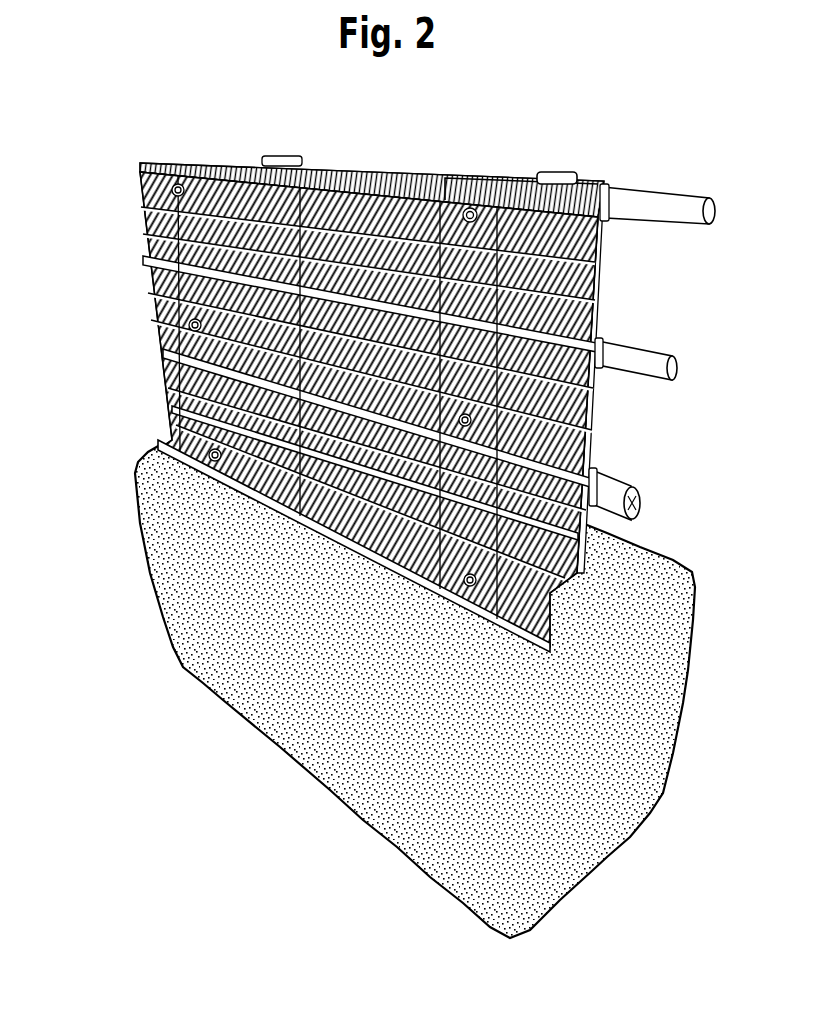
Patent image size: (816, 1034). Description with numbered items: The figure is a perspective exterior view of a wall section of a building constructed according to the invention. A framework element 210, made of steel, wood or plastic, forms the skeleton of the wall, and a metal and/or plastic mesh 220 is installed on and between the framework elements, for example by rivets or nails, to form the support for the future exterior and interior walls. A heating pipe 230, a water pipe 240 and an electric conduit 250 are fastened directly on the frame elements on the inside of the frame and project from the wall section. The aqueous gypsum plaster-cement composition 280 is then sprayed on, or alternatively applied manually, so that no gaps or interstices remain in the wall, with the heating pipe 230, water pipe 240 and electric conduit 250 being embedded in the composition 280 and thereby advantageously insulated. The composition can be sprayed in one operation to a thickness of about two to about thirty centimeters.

The framework element 210 is at (580, 156).
The metal and/or plastic mesh 220 is at (148, 294).
The heating pipe 230 is at (686, 175).
The water pipe 240 is at (675, 336).
The electric conduit 250 is at (648, 472).
The aqueous gypsum plaster-cement composition 280 is at (314, 706).